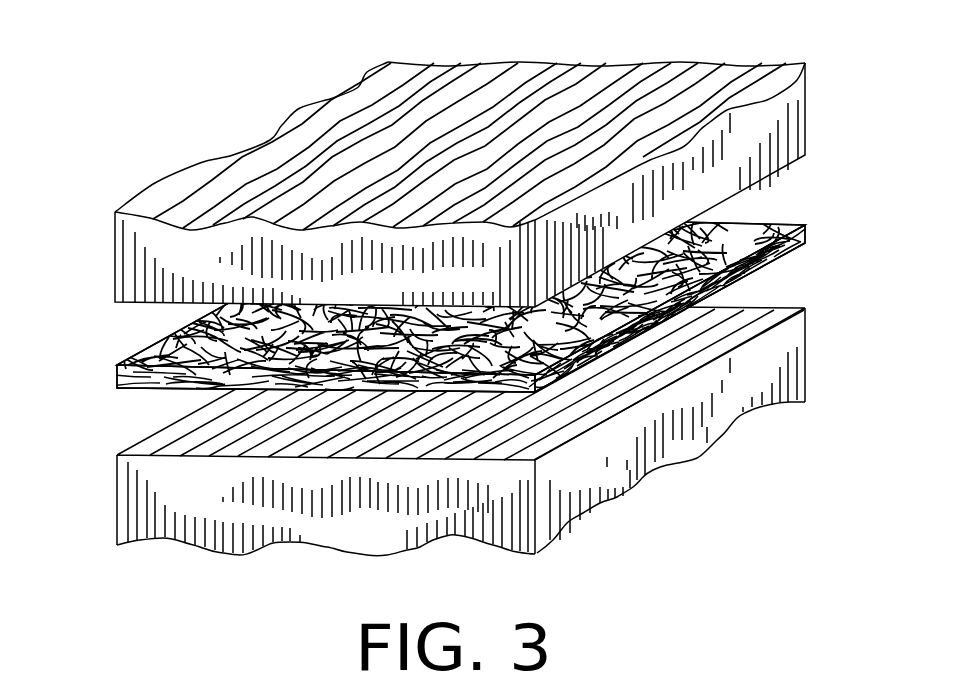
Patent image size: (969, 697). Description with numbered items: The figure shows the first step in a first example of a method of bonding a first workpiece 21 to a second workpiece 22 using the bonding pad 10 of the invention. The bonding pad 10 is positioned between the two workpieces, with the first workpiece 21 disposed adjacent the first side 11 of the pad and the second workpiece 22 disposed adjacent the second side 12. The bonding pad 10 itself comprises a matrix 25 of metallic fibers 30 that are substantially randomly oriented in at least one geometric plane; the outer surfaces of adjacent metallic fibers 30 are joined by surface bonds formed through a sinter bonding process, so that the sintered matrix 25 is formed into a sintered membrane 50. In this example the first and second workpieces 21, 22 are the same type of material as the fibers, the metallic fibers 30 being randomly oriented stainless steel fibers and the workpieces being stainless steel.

The bonding pad 10 is at (806, 230).
The first side 11 is at (782, 255).
The second side 12 is at (782, 228).
The first workpiece 21 is at (537, 517).
The second workpiece 22 is at (710, 84).
The matrix 25 is at (138, 362).
The metallic fibers 30 is at (118, 378).
The sintered membrane 50 is at (150, 390).